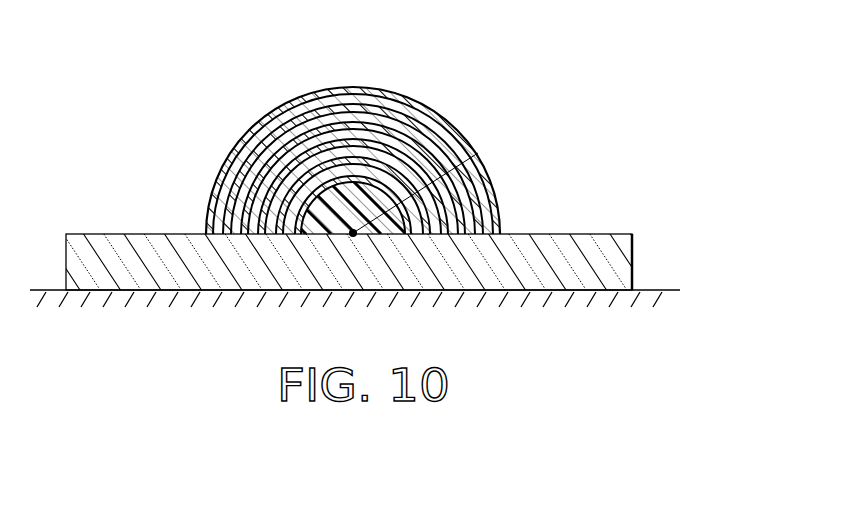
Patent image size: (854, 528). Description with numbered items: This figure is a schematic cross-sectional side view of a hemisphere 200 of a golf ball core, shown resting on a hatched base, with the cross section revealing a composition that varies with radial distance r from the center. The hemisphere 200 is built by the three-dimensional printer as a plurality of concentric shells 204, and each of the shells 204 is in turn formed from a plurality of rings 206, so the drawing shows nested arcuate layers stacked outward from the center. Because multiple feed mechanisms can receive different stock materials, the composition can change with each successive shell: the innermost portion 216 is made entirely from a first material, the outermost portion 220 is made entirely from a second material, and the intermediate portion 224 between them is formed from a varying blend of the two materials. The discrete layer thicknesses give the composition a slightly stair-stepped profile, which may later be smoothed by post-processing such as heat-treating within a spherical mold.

The hemisphere 200 is at (335, 141).
The shells 204 is at (317, 141).
The rings 206 is at (213, 191).
The innermost portion 216 is at (351, 233).
The outermost portion 220 is at (416, 99).
The intermediate portion 224 is at (234, 243).
The radius r is at (478, 153).